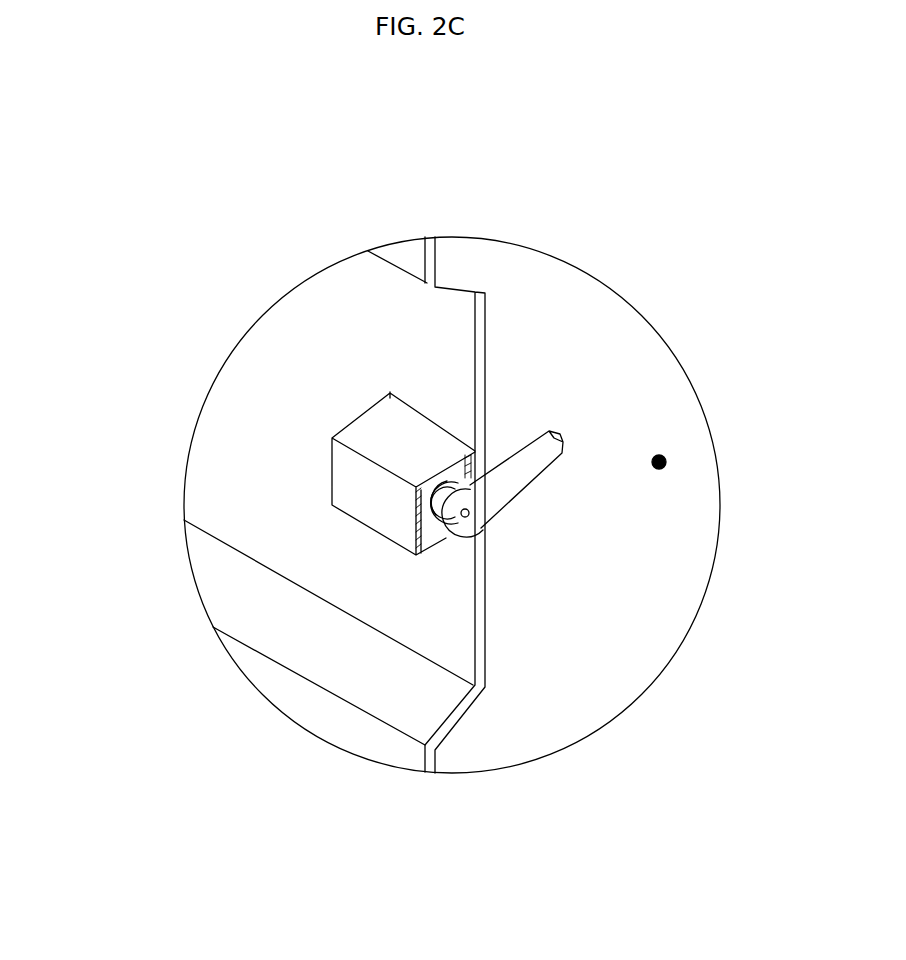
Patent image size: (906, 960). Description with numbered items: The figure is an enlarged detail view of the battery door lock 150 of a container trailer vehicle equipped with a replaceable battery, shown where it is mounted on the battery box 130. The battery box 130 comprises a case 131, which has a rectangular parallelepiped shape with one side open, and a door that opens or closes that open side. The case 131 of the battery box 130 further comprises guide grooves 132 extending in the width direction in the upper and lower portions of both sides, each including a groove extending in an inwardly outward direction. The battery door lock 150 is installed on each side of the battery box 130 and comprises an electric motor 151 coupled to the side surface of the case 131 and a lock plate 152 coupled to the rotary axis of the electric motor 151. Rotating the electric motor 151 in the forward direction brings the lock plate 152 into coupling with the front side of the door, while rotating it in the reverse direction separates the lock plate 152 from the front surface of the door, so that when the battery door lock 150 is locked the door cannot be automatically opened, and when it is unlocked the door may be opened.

The battery box 130 is at (594, 305).
The case 131 is at (245, 417).
The guide groove 132 is at (693, 420).
The battery door lock 150 is at (372, 498).
The electric motor 151 is at (362, 487).
The lock plate 152 is at (538, 531).